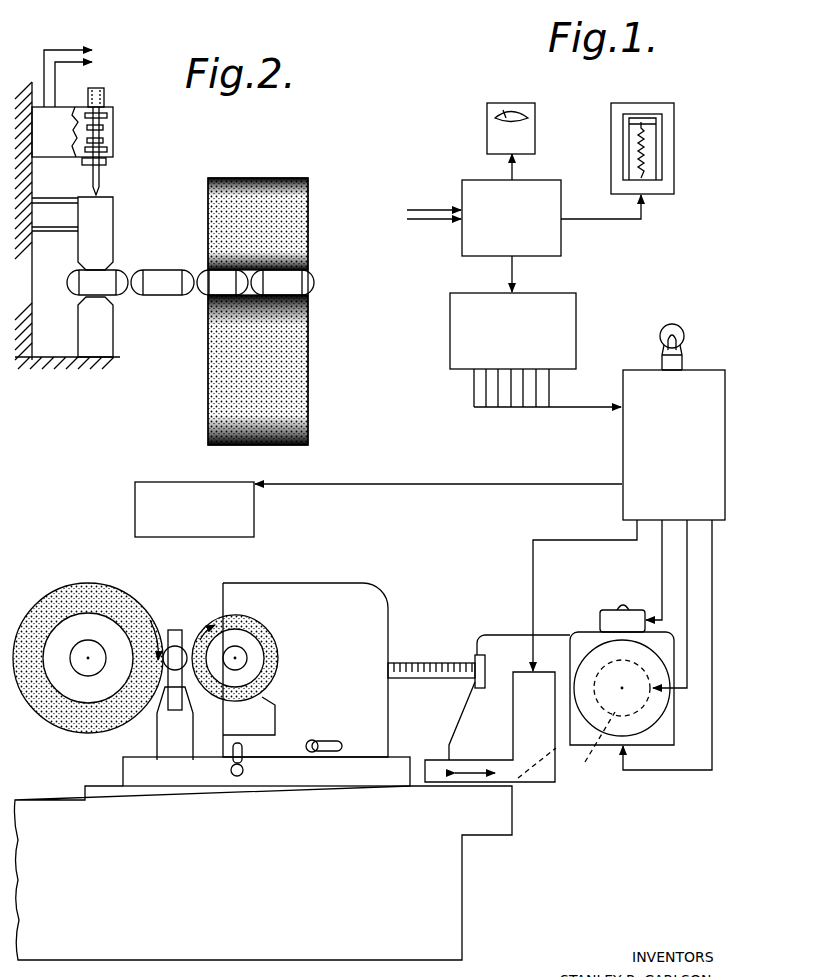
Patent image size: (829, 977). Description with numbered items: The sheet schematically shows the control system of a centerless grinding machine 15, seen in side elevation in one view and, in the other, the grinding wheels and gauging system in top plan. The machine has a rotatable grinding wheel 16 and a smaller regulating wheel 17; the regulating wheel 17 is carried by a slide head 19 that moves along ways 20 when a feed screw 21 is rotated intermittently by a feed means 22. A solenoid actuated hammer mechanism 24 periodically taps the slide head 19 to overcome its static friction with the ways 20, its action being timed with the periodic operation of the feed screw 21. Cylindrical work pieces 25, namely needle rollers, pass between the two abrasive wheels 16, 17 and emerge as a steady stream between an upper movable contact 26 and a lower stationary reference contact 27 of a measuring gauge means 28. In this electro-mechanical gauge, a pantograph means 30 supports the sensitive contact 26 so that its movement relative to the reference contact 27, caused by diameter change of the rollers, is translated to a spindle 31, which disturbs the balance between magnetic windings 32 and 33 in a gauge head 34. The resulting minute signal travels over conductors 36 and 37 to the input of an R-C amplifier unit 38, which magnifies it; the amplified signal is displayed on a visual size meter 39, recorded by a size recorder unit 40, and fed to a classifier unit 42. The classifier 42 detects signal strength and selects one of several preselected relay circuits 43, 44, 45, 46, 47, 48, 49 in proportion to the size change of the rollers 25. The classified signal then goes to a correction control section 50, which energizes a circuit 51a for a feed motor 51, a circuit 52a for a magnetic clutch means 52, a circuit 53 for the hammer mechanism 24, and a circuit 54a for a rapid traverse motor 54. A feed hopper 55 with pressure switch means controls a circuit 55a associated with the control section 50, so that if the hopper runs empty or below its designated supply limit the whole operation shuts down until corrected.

In FIG. 1, the centerless grinding machine 15 is at (465, 886).
In FIG. 2, the grinding wheel 16 is at (284, 388).
In FIG. 1, the grinding wheel 16 is at (103, 582).
In FIG. 2, the regulating wheel 17 is at (284, 238).
In FIG. 1, the regulating wheel 17 is at (252, 610).
In FIG. 1, the slide head 19 is at (372, 610).
In FIG. 1, the ways 20 is at (327, 786).
In FIG. 1, the feed screw 21 is at (428, 663).
In FIG. 1, the feed means 22 is at (583, 628).
In FIG. 1, the solenoid actuated hammer mechanism 24 is at (535, 778).
In FIG. 2, the cylindrical work pieces 25 is at (162, 290).
In FIG. 1, the cylindrical work pieces 25 is at (181, 648).
In FIG. 2, the upper movable contact 26 is at (108, 247).
In FIG. 1, the upper movable contact 26 is at (172, 628).
In FIG. 2, the lower stationary contact 27 is at (102, 327).
In FIG. 1, the lower stationary contact 27 is at (172, 702).
In FIG. 2, the measuring gauge means 28 is at (118, 212).
In FIG. 2, the pantograph means 30 is at (60, 236).
In FIG. 2, the spindle 31 is at (101, 180).
In FIG. 2, the magnetic coil means 32 is at (107, 150).
In FIG. 2, the magnetic coil means 33 is at (108, 116).
In FIG. 2, the gauge head 34 is at (70, 100).
In FIG. 2, the conductor 36 is at (62, 48).
In FIG. 1, the conductor 36 is at (435, 205).
In FIG. 2, the conductor 37 is at (60, 63).
In FIG. 1, the conductor 37 is at (430, 222).
In FIG. 1, the R-C amplifier unit 38 is at (462, 250).
In FIG. 1, the visual size meter 39 is at (487, 135).
In FIG. 1, the size recorder unit 40 is at (672, 153).
In FIG. 1, the classifier unit 42 is at (578, 310).
In FIG. 1, the relay circuit 43 is at (472, 386).
In FIG. 1, the relay circuit 44 is at (484, 400).
In FIG. 1, the relay circuit 45 is at (496, 402).
In FIG. 1, the relay circuit 46 is at (509, 398).
In FIG. 1, the relay circuit 47 is at (521, 410).
In FIG. 1, the relay circuit 48 is at (537, 410).
In FIG. 1, the relay circuit 49 is at (551, 396).
In FIG. 1, the correction control section 50 is at (712, 358).
In FIG. 1, the feed motor 51 is at (608, 608).
In FIG. 1, the feed motor circuit 51a is at (660, 580).
In FIG. 1, the magnetic clutch means 52 is at (622, 712).
In FIG. 1, the magnetic clutch circuit 52a is at (687, 582).
In FIG. 1, the hammer mechanism circuit 53 is at (548, 556).
In FIG. 1, the rapid traverse motor 54 is at (653, 745).
In FIG. 1, the rapid traverse motor circuit 54a is at (712, 738).
In FIG. 1, the feed hopper 55 is at (166, 481).
In FIG. 1, the hopper control circuit 55a is at (364, 483).